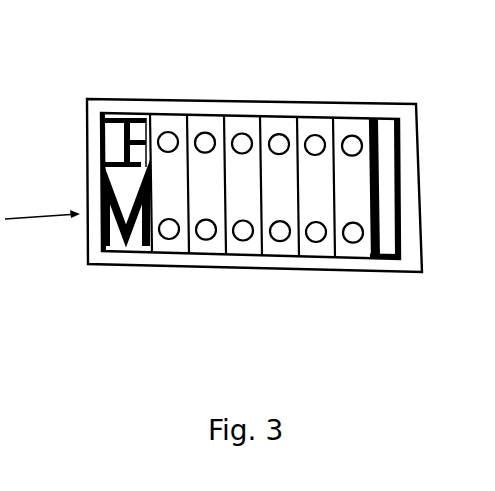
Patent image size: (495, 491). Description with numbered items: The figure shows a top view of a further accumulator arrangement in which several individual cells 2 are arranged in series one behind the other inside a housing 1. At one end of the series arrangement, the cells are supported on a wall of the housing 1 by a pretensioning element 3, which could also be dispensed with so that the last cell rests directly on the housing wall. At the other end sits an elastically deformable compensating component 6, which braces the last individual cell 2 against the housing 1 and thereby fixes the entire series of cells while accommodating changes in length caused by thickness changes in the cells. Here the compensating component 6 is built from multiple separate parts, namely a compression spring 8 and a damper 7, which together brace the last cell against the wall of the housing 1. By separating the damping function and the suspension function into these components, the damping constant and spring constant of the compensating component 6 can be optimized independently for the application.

The housing 1 is at (415, 226).
The individual cell 2 is at (159, 122).
The pretensioning element 3 is at (385, 175).
The compensating component 6 is at (74, 161).
The damper 7 is at (118, 120).
The compression spring 8 is at (142, 243).